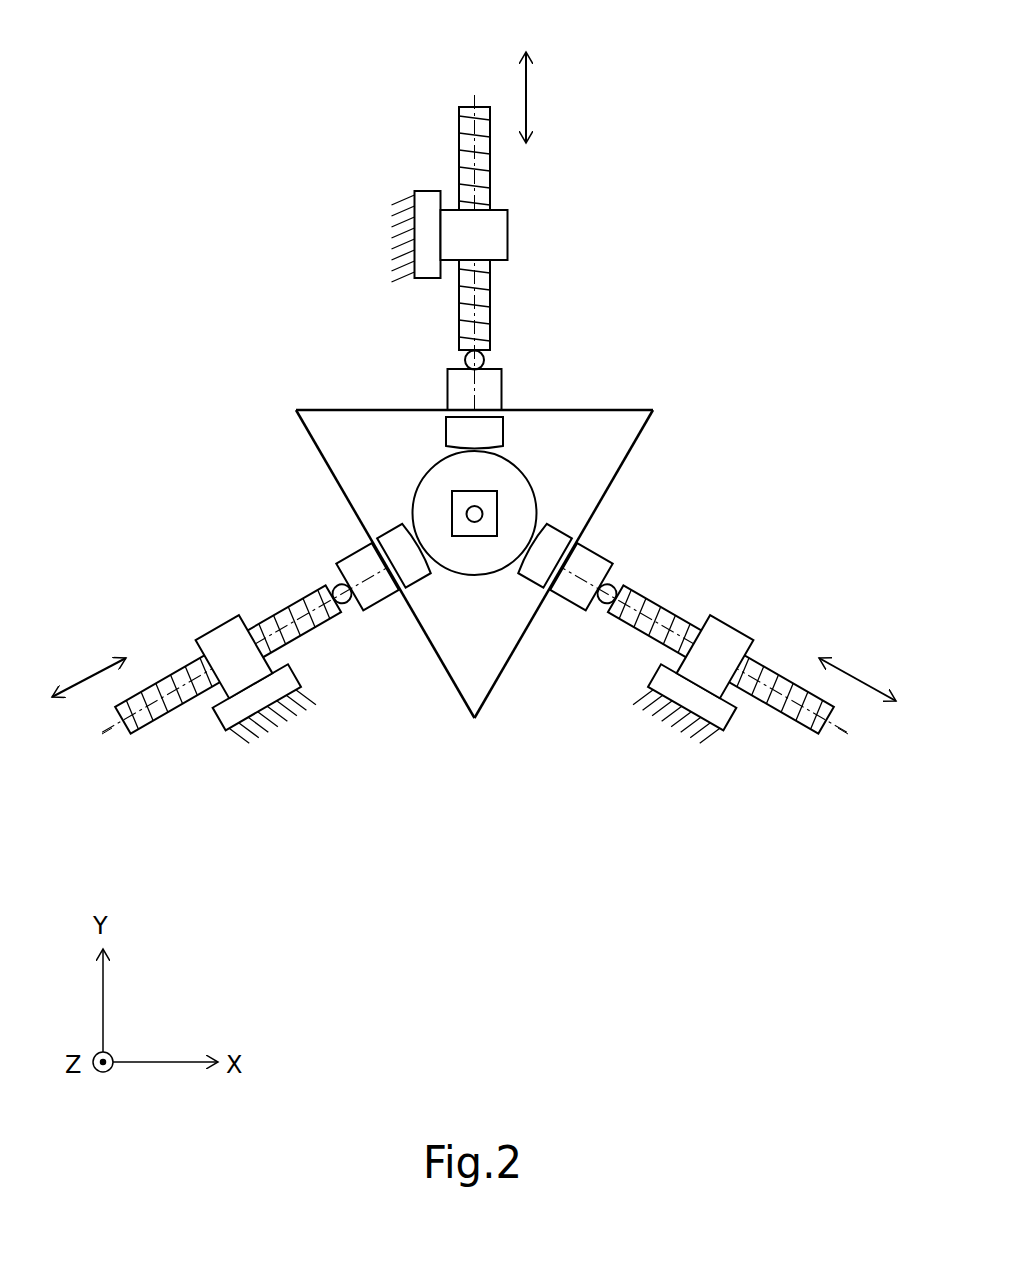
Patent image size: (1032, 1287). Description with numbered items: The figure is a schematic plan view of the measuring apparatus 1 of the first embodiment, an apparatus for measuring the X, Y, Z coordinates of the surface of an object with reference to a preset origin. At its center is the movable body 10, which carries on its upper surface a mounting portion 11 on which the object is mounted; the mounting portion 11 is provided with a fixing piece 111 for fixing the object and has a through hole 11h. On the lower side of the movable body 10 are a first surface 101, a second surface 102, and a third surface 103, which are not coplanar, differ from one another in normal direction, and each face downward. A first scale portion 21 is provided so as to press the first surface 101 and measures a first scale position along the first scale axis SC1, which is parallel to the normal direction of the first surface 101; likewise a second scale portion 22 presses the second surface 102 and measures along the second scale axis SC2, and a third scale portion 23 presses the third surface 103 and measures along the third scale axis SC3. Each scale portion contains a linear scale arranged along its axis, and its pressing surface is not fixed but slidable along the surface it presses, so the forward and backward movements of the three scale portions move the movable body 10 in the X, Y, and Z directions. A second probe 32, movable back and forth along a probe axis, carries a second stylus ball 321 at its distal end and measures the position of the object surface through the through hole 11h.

The measuring apparatus 1 is at (638, 106).
The movable body 10 is at (327, 397).
The mounting portion 11 is at (398, 425).
The through hole 11h is at (431, 483).
The first surface 101 is at (450, 681).
The second surface 102 is at (492, 681).
The third surface 103 is at (617, 409).
The fixing piece 111 is at (503, 430).
The first scale portion 21 is at (209, 616).
The second scale portion 22 is at (736, 621).
The third scale portion 23 is at (508, 294).
The second probe 32 is at (482, 500).
The second stylus ball 321 is at (484, 515).
The first scale axis SC1 is at (106, 742).
The second scale axis SC2 is at (830, 742).
The third scale axis SC3 is at (475, 102).